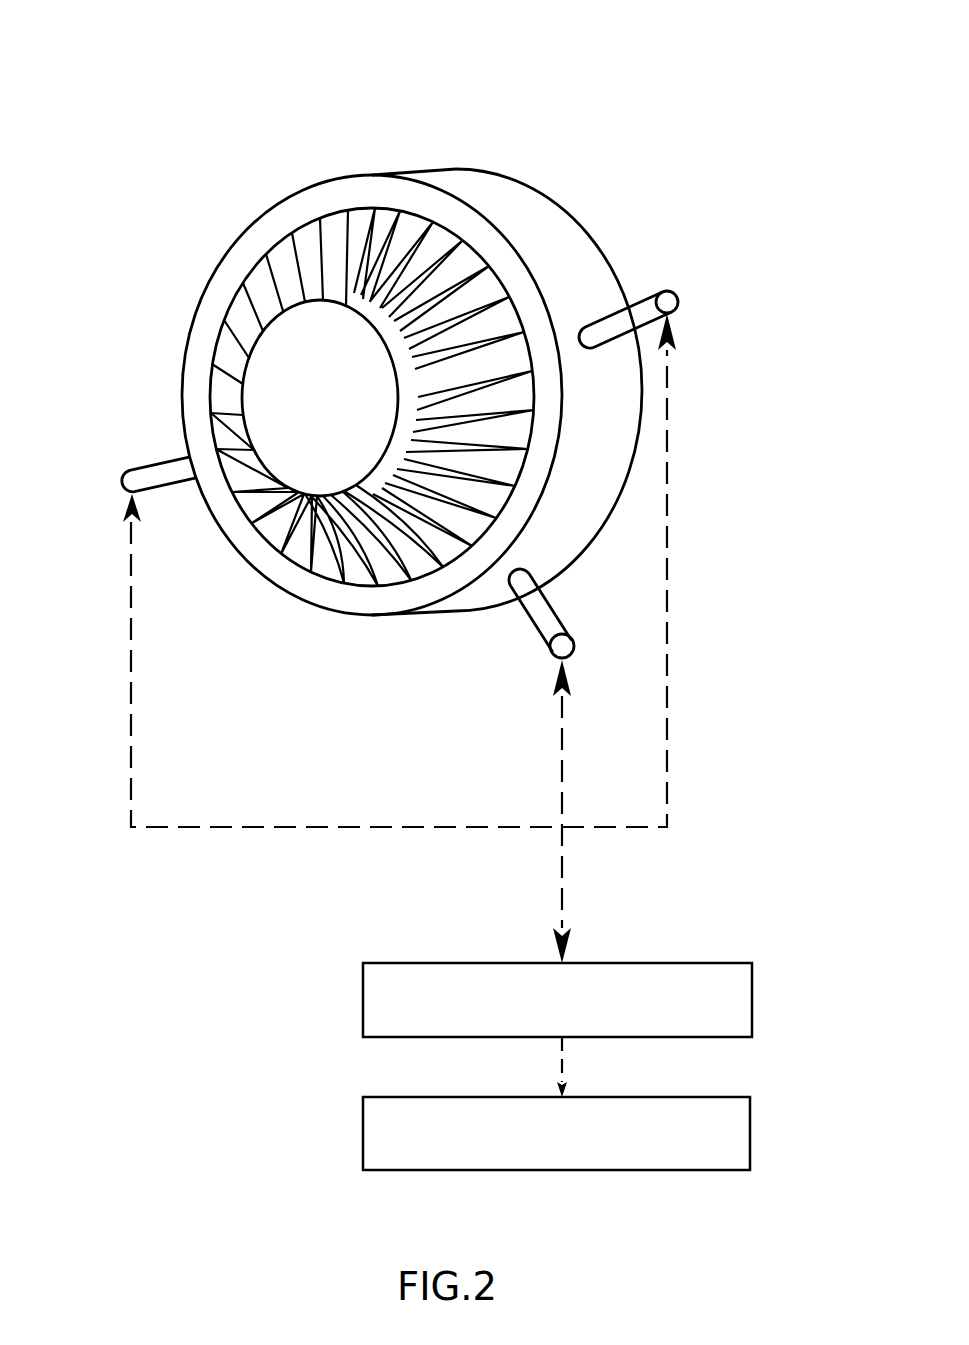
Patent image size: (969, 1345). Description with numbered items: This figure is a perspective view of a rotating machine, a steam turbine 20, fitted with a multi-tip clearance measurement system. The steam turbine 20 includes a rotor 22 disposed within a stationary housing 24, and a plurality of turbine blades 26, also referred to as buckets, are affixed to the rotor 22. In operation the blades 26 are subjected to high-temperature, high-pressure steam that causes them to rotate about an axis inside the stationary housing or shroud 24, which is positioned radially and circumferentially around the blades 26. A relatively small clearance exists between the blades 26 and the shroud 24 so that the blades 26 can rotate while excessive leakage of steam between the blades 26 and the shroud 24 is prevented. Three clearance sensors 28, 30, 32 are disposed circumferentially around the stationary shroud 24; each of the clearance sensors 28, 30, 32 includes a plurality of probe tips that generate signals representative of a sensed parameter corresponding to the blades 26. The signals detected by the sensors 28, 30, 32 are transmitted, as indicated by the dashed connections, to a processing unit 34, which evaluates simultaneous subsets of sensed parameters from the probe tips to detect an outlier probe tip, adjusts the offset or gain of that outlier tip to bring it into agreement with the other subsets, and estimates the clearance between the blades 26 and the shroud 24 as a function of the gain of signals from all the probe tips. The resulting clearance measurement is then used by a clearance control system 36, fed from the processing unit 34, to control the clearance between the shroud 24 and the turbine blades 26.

The steam turbine 20 is at (152, 50).
The rotor 22 is at (335, 413).
The stationary housing 24 is at (461, 170).
The turbine blades 26 is at (232, 393).
The clearance sensor 28 is at (672, 290).
The clearance sensor 30 is at (567, 620).
The clearance sensor 32 is at (178, 487).
The processing unit 34 is at (752, 1000).
The clearance control system 36 is at (752, 1137).